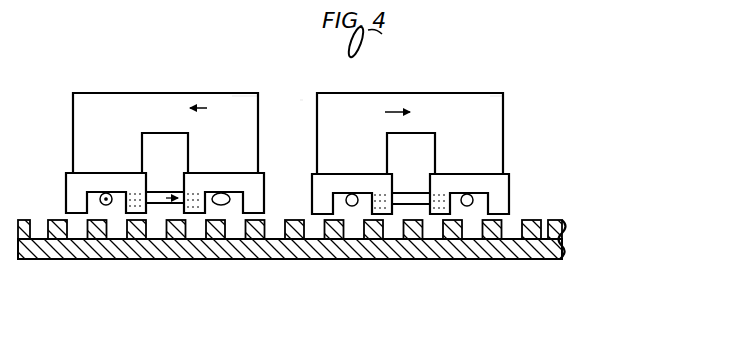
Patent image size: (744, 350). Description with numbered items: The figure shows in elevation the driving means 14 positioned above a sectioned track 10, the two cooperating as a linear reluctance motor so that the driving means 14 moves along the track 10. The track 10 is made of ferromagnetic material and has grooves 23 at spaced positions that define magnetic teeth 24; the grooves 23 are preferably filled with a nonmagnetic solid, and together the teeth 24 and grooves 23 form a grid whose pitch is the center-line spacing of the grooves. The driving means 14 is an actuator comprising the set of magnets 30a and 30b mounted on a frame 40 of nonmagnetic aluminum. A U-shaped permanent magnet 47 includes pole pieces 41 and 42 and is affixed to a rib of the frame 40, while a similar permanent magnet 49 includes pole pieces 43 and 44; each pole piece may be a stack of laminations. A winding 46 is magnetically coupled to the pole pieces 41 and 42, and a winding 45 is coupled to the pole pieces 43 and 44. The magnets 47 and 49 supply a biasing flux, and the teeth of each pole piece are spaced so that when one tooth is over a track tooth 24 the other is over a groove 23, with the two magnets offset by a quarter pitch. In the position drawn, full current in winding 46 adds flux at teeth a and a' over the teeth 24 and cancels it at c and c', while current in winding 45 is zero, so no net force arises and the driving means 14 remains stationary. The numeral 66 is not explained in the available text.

The track 10 is at (297, 235).
The driving means 14 is at (294, 104).
The grooves 23 is at (534, 221).
The magnetic teeth 24 is at (205, 261).
The magnet 30a is at (88, 98).
The magnet 30b is at (366, 82).
The frame 40 is at (7, 136).
The pole piece 41 is at (73, 186).
The pole piece 42 is at (263, 179).
The pole piece 43 is at (313, 192).
The pole piece 44 is at (512, 181).
The winding 45 is at (408, 197).
The winding 46 is at (158, 203).
The U-shaped magnet 47 is at (237, 103).
The magnet 49 is at (493, 99).
The stator mounting 66 is at (7, 176).